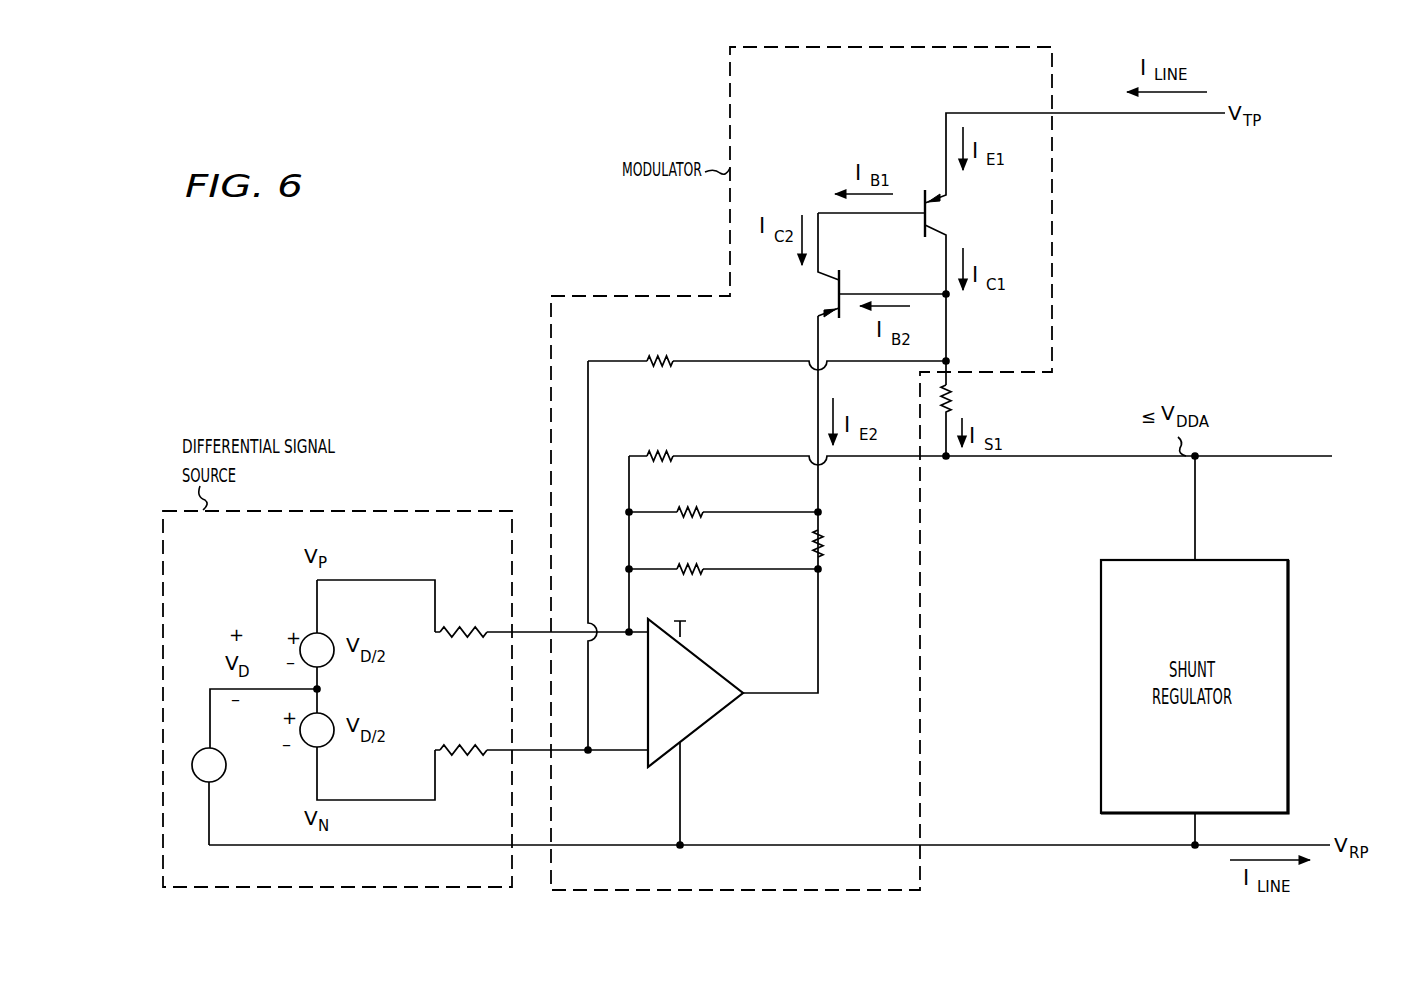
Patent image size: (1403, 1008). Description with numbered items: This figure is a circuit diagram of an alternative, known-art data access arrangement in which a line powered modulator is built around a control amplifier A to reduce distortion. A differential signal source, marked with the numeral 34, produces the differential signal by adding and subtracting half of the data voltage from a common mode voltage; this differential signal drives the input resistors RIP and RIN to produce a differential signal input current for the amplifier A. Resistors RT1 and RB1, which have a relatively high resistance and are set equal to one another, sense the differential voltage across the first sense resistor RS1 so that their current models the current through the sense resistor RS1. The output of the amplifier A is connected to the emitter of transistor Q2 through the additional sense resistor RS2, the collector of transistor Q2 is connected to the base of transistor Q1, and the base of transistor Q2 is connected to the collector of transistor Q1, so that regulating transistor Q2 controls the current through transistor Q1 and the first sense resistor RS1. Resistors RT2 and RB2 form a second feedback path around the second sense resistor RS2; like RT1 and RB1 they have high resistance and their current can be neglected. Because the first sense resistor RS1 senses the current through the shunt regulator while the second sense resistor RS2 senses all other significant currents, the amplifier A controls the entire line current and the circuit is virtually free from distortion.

The common mode voltage source 34 is at (197, 753).
The transistor Q1 is at (1021, 249).
The transistor Q2 is at (866, 265).
The first sense resistor RS1 is at (960, 398).
The second sense resistor RS2 is at (840, 547).
The resistor RT1 is at (767, 345).
The resistor RB1 is at (980, 440).
The resistor RT2 is at (723, 494).
The resistor RB2 is at (723, 551).
The input resistor RIP is at (541, 607).
The input resistor RIN is at (541, 779).
The control amplifier A is at (695, 713).